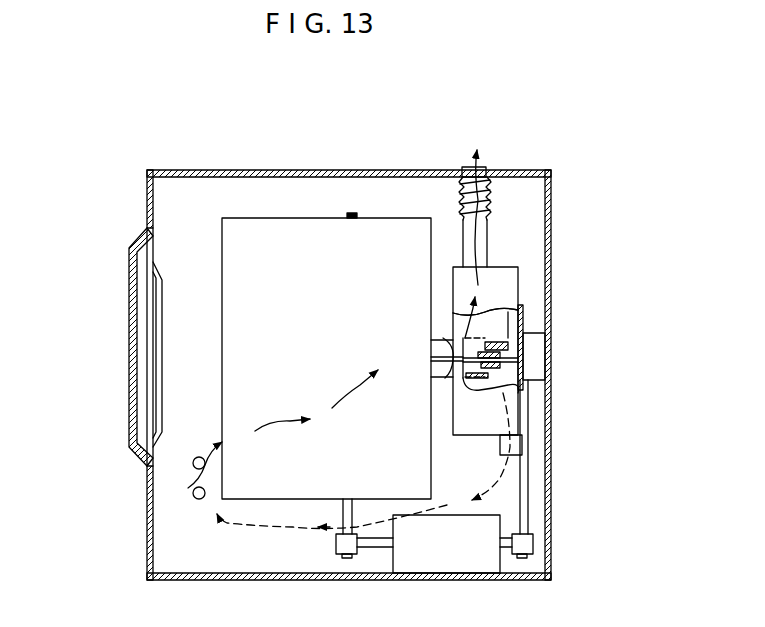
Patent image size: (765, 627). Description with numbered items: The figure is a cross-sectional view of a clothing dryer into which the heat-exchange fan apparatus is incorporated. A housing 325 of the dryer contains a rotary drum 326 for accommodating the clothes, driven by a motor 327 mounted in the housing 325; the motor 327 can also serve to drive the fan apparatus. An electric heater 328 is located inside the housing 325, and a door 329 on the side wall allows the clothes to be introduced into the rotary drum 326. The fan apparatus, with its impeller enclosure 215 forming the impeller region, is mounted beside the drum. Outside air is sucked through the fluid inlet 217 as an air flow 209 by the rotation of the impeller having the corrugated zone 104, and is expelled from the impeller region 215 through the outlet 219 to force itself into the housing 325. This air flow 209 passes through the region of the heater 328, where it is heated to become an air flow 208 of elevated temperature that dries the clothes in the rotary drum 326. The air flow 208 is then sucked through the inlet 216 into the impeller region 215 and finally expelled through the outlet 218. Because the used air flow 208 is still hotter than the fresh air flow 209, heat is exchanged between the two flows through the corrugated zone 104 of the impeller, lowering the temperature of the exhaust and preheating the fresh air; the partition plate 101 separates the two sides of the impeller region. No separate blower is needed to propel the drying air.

The partition plate 101 is at (536, 364).
The corrugated zone 104 is at (520, 318).
The air flow 208 is at (347, 392).
The air flow 209 is at (507, 465).
The impeller enclosure 215 is at (520, 267).
The fluid inlet 216 is at (448, 375).
The fluid inlet 217 is at (540, 372).
The fluid outlet 218 is at (480, 235).
The fluid outlet 219 is at (520, 443).
The housing 325 is at (404, 177).
The rotary drum 326 is at (282, 228).
The motor 327 is at (440, 563).
The electric heater 328 is at (193, 468).
The door 329 is at (130, 364).